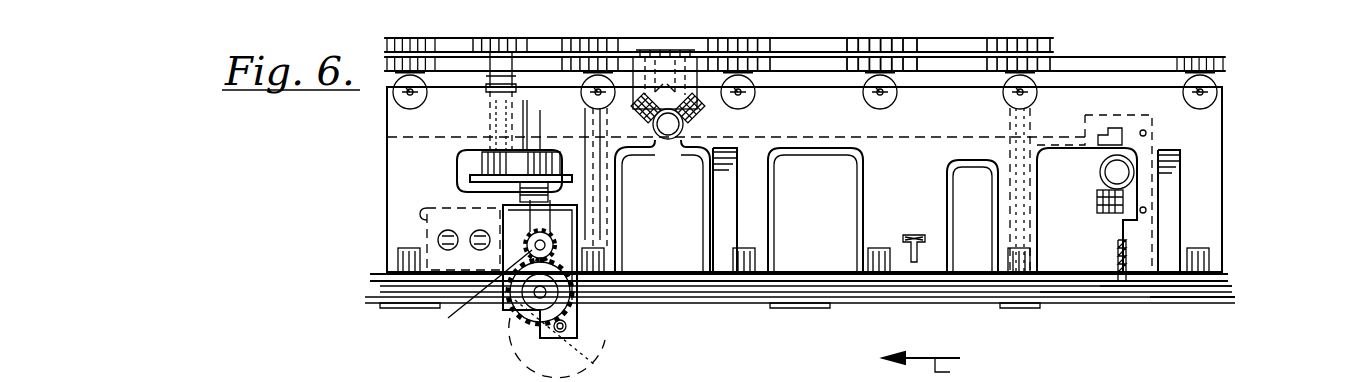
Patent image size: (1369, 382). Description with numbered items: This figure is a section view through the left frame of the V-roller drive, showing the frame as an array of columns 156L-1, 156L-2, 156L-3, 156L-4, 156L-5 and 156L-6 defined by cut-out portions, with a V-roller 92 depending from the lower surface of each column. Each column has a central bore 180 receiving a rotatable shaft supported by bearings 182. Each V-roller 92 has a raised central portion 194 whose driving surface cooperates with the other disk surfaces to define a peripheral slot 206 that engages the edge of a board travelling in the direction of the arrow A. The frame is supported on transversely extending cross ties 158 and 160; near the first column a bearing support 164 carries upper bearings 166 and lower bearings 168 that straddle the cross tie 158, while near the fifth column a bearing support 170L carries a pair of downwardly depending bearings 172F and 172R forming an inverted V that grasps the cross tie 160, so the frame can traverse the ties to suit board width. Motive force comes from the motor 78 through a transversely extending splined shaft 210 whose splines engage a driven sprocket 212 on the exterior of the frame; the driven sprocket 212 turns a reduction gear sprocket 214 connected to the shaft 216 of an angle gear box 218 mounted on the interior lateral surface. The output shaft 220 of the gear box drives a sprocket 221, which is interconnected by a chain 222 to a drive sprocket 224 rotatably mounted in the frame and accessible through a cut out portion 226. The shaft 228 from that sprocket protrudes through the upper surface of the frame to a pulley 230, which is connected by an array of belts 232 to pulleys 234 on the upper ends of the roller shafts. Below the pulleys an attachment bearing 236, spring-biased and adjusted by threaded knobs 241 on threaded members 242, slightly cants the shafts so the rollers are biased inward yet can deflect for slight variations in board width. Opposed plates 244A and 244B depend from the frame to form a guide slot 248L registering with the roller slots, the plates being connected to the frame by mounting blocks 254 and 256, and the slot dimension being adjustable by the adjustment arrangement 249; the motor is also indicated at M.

The pulleys 234 is at (392, 56).
The belts 232 is at (455, 42).
The pulley 230 is at (502, 40).
The bearing support 170L is at (668, 68).
The attachment bearing 236 is at (1040, 80).
The threaded knobs 241 is at (893, 96).
The threaded members 242 is at (880, 100).
The rear bearing 172R is at (640, 106).
The front bearing 172F is at (698, 108).
The cross tie 160 is at (676, 152).
The output shaft 220 is at (526, 100).
The sprocket 221 is at (524, 128).
The shaft 228 is at (490, 103).
The cut out portion 226 is at (492, 141).
The drive sprocket 224 is at (470, 166).
The chain 222 is at (462, 178).
The angle gear box 218 is at (548, 188).
The shaft 216 is at (558, 242).
The driven sprocket 212 is at (522, 308).
The reduction gear sprocket 214 is at (467, 291).
The splined shaft 210 is at (567, 325).
The motor M is at (600, 340).
The motor 78 is at (592, 356).
The column 156L-6 is at (407, 230).
The column 156L-5 is at (606, 262).
The column 156L-4 is at (756, 262).
The column 156L-3 is at (924, 262).
The column 156L-2 is at (1032, 246).
The column 156L-1 is at (1200, 219).
The mounting block 256 is at (723, 208).
The adjustment arrangement 249 is at (899, 292).
The central bore 180 is at (1011, 200).
The bearings 182 is at (1011, 230).
The cross tie 158 is at (1100, 173).
The lower bearings 168 is at (1097, 218).
The bearing support 164 is at (1155, 147).
The upper bearings 166 is at (1114, 142).
The mounting block 254 is at (1165, 202).
The V-roller 92 is at (376, 296).
The plate 244A is at (1222, 290).
The plate 244B is at (1208, 308).
The slot 248L is at (1128, 305).
The peripheral slot 206 is at (1080, 308).
The raised central portion 194 is at (1030, 306).
The arrow A is at (924, 367).